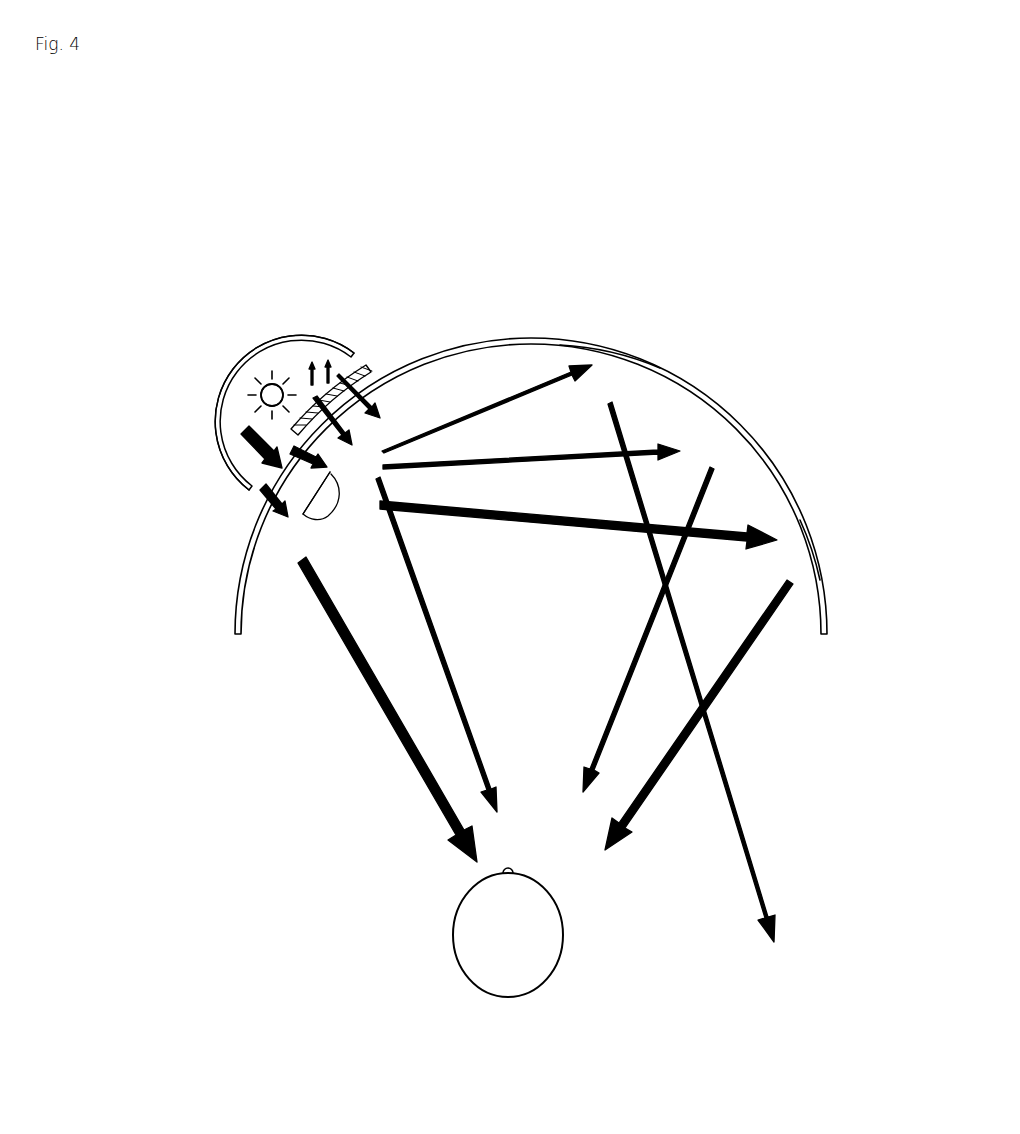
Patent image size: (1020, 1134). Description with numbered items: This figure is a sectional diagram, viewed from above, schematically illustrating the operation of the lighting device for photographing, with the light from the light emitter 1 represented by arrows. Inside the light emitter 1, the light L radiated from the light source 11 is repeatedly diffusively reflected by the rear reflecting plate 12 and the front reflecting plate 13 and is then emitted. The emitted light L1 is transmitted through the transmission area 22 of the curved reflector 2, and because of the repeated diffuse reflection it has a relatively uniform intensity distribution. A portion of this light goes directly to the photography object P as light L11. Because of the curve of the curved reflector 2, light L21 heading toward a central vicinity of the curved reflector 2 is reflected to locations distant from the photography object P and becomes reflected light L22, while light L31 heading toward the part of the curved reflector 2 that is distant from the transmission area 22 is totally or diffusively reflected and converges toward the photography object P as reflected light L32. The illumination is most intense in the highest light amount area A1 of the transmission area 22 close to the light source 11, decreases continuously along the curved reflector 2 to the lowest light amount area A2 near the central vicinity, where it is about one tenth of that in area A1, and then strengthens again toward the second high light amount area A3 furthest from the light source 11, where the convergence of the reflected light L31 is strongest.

The light emitter 1 is at (244, 305).
The light source 11 is at (241, 364).
The rear reflecting plate 12 is at (218, 393).
The front reflecting plate 13 is at (367, 364).
The light L is at (250, 441).
The light L1 is at (369, 372).
The transmission area 22 is at (333, 525).
The highest light amount area A1 is at (240, 518).
The light L21 is at (513, 398).
The lowest light amount area A2 is at (620, 331).
The curved reflector 2 is at (733, 412).
The second high light amount area A3 is at (852, 578).
The light L31 is at (514, 465).
The light L11 is at (450, 673).
The reflected light L22 is at (718, 742).
The reflected light L32 is at (661, 768).
The photography object P is at (479, 1014).